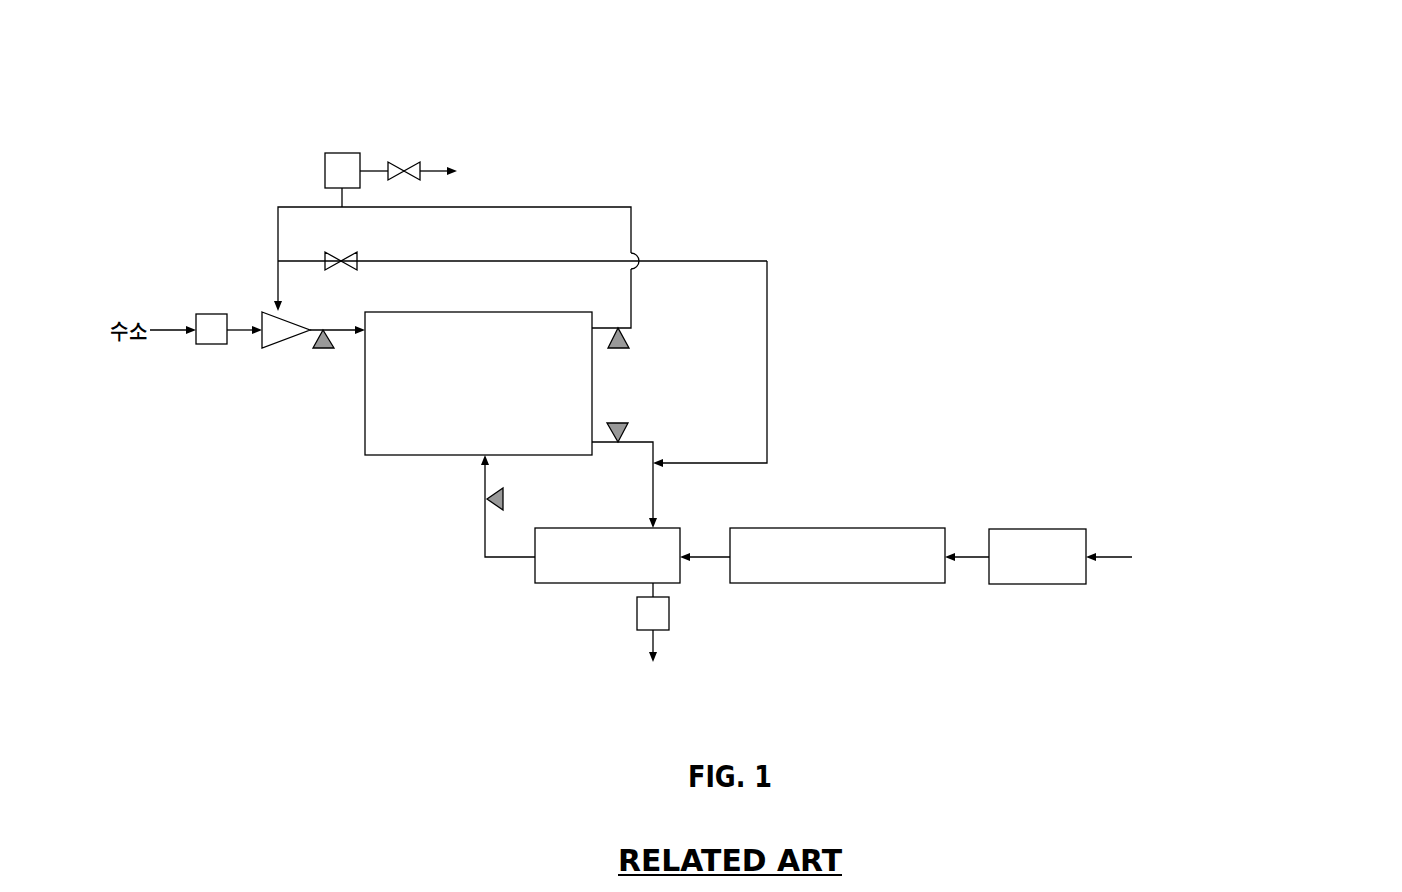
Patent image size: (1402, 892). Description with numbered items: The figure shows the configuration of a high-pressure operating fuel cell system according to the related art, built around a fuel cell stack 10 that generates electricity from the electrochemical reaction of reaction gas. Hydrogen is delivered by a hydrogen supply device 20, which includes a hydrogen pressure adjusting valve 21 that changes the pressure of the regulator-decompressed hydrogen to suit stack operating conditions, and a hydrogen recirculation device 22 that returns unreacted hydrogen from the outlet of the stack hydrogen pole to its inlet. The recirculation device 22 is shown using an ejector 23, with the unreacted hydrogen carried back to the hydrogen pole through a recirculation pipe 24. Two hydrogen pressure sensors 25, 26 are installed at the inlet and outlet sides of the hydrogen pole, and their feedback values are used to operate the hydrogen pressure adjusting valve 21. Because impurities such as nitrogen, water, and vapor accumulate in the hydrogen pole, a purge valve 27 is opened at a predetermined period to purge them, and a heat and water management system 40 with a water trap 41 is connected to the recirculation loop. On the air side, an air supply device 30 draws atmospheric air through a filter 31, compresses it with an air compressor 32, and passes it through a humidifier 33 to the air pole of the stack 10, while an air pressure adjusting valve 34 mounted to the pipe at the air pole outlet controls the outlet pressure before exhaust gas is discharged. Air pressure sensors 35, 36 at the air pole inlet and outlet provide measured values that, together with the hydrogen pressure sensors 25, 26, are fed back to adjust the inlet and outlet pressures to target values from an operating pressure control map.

The fuel cell stack 10 is at (365, 432).
The hydrogen supply device 20 is at (391, 308).
The hydrogen pressure adjusting valve 21 is at (208, 313).
The hydrogen recirculation device 22 is at (195, 196).
The ejector 23 is at (267, 310).
The recirculation pipe 24 is at (278, 239).
The hydrogen pressure sensor 25 is at (323, 350).
The hydrogen pressure sensor 26 is at (620, 349).
The purge valve 27 is at (350, 269).
The air supply device 30 is at (939, 578).
The filter 31 is at (1018, 529).
The air compressor 32 is at (807, 528).
The humidifier 33 is at (588, 583).
The air pressure adjusting valve 34 is at (669, 614).
The air pressure sensor 35 is at (494, 504).
The air pressure sensor 36 is at (620, 425).
The heat and water management system 40 is at (376, 129).
The water trap 41 is at (342, 153).